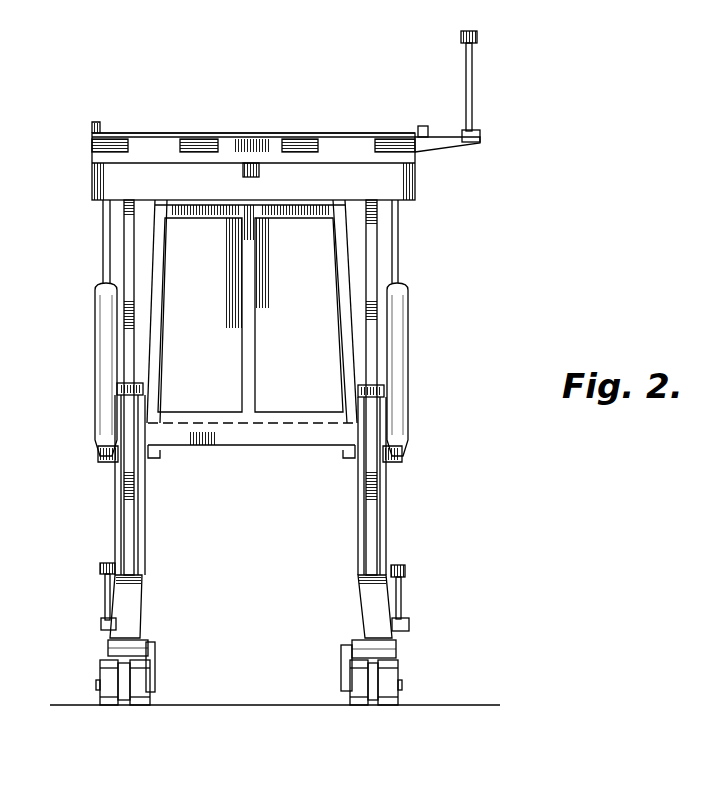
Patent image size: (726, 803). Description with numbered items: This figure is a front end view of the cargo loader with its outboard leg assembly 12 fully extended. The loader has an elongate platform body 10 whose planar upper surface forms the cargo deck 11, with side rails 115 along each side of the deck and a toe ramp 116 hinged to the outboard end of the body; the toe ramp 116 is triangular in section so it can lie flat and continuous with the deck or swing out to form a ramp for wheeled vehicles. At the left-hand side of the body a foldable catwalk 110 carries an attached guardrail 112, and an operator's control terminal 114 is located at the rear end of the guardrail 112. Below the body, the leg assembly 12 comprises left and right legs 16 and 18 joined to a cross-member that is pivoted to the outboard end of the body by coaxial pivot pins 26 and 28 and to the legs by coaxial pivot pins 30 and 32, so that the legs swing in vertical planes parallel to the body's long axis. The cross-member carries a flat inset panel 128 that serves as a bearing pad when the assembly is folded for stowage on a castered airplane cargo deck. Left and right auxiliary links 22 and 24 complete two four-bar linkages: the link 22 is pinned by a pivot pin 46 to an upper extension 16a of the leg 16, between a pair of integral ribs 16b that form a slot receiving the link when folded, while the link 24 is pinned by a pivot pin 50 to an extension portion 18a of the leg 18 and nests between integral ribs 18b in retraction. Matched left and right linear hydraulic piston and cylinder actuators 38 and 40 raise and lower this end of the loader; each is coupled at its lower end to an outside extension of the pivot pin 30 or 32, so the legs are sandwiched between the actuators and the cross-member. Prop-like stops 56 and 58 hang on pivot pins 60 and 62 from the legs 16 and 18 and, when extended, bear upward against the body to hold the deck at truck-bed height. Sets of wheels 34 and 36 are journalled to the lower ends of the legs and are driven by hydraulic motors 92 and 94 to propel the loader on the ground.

The platform body 10 is at (428, 188).
The cargo deck 11 is at (268, 131).
The outboard leg assembly 12 is at (330, 331).
The left leg 16 is at (385, 436).
The upper extension of the left leg 16a is at (380, 420).
The integral ribs 16b is at (364, 500).
The right leg 18 is at (123, 436).
The extension portion of the right leg 18a is at (116, 420).
The integral ribs 18b is at (140, 482).
The left auxiliary link 22 is at (380, 262).
The right auxiliary link 24 is at (125, 262).
The pivot pin 26 is at (340, 200).
The pivot pin 28 is at (163, 200).
The pivot pin 30 is at (402, 456).
The pivot pin 32 is at (100, 455).
The set of wheels 34 is at (398, 665).
The set of wheels 36 is at (100, 673).
The left linear hydraulic piston and cylinder actuator 38 is at (408, 322).
The right linear hydraulic piston and cylinder actuator 40 is at (102, 308).
The pivot pin 46 is at (385, 391).
The pivot pin 50 is at (120, 386).
The stop 56 is at (405, 585).
The stop 58 is at (105, 588).
The pivot pin 60 is at (410, 625).
The pivot pin 62 is at (102, 625).
The hydraulic motor 92 is at (356, 645).
The hydraulic motor 94 is at (150, 642).
The foldable catwalk 110 is at (473, 143).
The guardrail 112 is at (473, 90).
The operator's control terminal 114 is at (478, 36).
The side rails 115 is at (96, 124).
The toe ramp 116 is at (340, 155).
The inset panel 128 is at (215, 396).